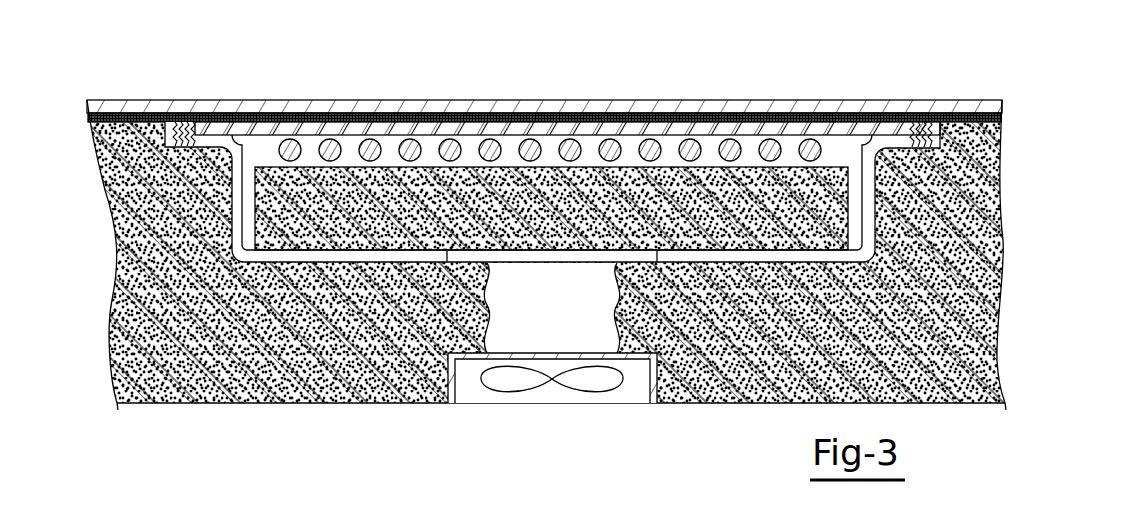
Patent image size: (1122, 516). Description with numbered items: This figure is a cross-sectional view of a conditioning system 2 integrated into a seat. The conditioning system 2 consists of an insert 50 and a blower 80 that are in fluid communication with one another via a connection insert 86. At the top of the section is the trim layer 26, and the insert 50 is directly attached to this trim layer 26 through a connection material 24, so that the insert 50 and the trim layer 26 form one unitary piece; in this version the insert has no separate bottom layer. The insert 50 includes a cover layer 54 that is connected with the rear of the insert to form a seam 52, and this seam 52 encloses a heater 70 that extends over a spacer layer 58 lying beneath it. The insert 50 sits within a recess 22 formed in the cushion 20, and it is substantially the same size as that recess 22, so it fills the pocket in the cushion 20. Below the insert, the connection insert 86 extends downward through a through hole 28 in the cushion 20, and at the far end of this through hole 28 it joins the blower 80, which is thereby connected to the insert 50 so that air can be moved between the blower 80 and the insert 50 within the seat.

The conditioning system 2 is at (946, 56).
The cushion 20 is at (985, 228).
The recess 22 is at (989, 174).
The connection material 24 is at (408, 115).
The trim layer 26 is at (273, 100).
The through hole 28 is at (429, 428).
The insert 50 is at (205, 114).
The seam 52 is at (912, 128).
The cover layer 54 is at (745, 130).
The spacer layer 58 is at (290, 205).
The heater 70 is at (532, 140).
The blower 80 is at (655, 387).
The connection insert 86 is at (497, 268).